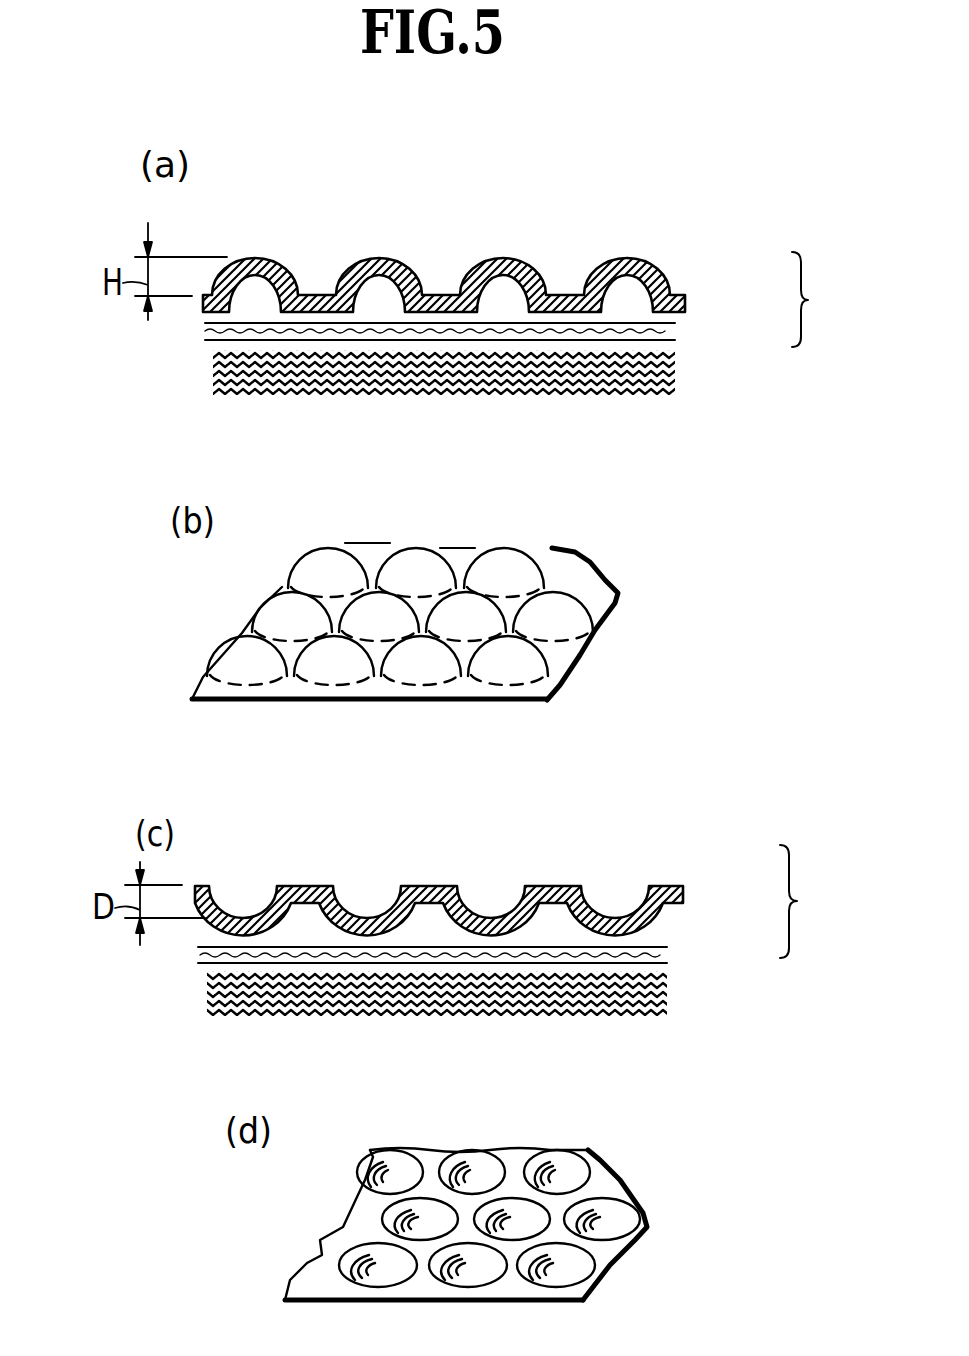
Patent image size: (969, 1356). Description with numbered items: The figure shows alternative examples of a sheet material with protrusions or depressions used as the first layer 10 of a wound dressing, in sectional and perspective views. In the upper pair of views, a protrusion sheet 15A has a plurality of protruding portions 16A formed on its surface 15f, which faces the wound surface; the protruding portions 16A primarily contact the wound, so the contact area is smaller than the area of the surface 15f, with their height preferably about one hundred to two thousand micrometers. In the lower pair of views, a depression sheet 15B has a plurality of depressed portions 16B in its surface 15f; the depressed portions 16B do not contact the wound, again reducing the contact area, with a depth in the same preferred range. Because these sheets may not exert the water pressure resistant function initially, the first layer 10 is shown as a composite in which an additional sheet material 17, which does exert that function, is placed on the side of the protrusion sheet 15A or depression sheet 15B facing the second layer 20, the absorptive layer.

The first layer 10 is at (817, 605).
The protrusion sheet 15A is at (688, 308).
The depression sheet 15B is at (683, 893).
The surface 15f is at (255, 258).
The protruding portions 16A is at (613, 267).
The depressed portions 16B is at (620, 920).
The additional sheet material 17 is at (667, 337).
The second layer 20 is at (670, 372).